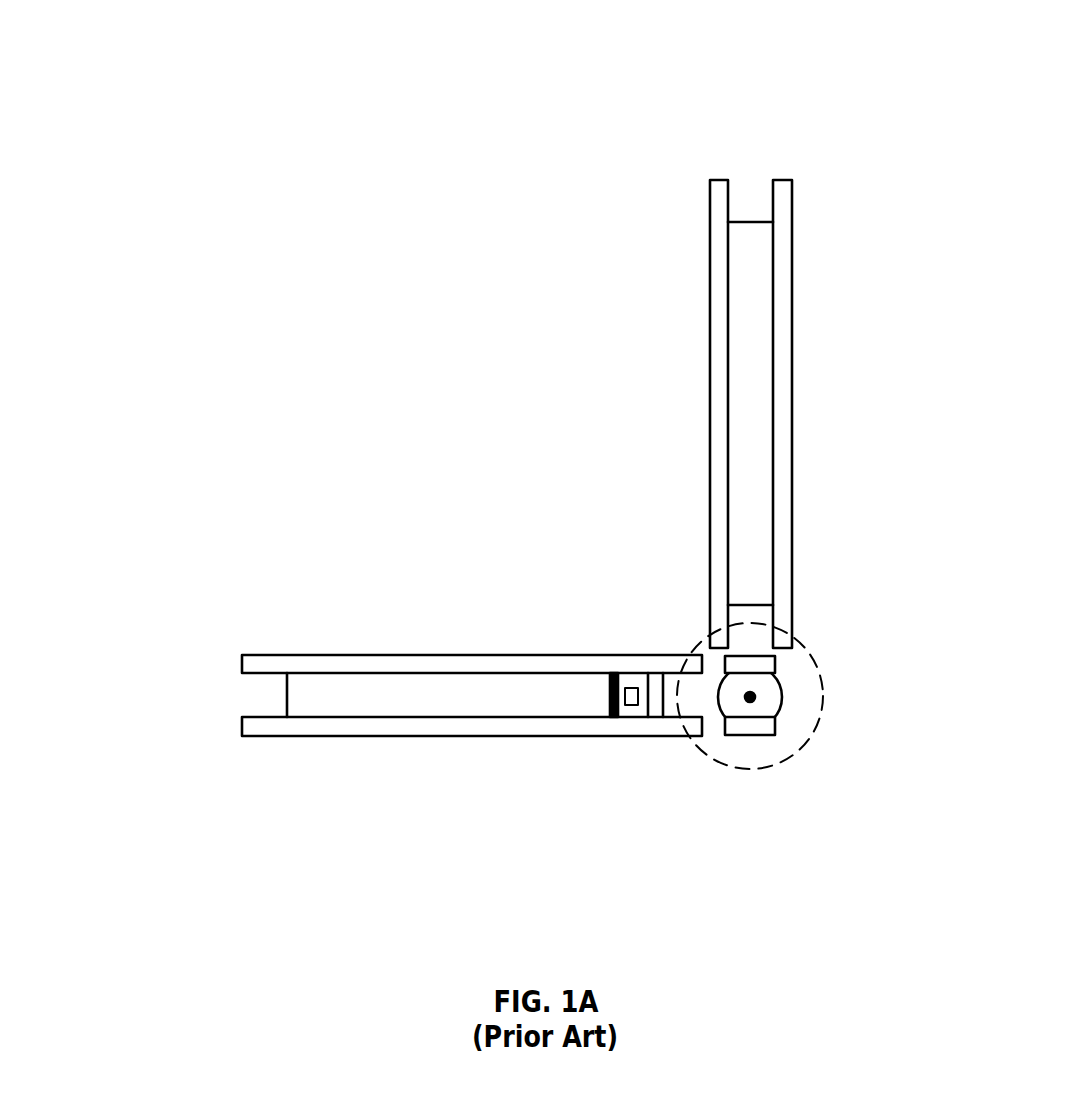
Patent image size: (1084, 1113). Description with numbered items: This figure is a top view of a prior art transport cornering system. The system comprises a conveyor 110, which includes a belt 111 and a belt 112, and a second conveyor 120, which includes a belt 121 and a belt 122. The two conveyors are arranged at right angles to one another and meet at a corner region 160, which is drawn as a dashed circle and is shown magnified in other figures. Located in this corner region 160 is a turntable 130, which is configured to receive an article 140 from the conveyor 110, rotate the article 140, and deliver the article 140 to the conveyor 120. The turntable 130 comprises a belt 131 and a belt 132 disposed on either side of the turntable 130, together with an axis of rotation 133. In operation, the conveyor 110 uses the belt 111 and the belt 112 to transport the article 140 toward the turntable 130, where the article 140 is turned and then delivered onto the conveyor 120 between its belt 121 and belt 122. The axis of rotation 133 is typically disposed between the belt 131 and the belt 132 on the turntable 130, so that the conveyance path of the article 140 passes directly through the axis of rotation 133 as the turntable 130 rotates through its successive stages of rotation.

The conveyor 110 is at (377, 698).
The belt 111 is at (300, 654).
The belt 112 is at (472, 791).
The conveyor 120 is at (744, 329).
The belt 121 is at (709, 443).
The belt 122 is at (792, 257).
The turntable 130 is at (822, 746).
The belt 131 is at (776, 668).
The belt 132 is at (758, 736).
The axis of rotation 133 is at (750, 697).
The article 140 is at (610, 697).
The corner region 160 is at (780, 766).